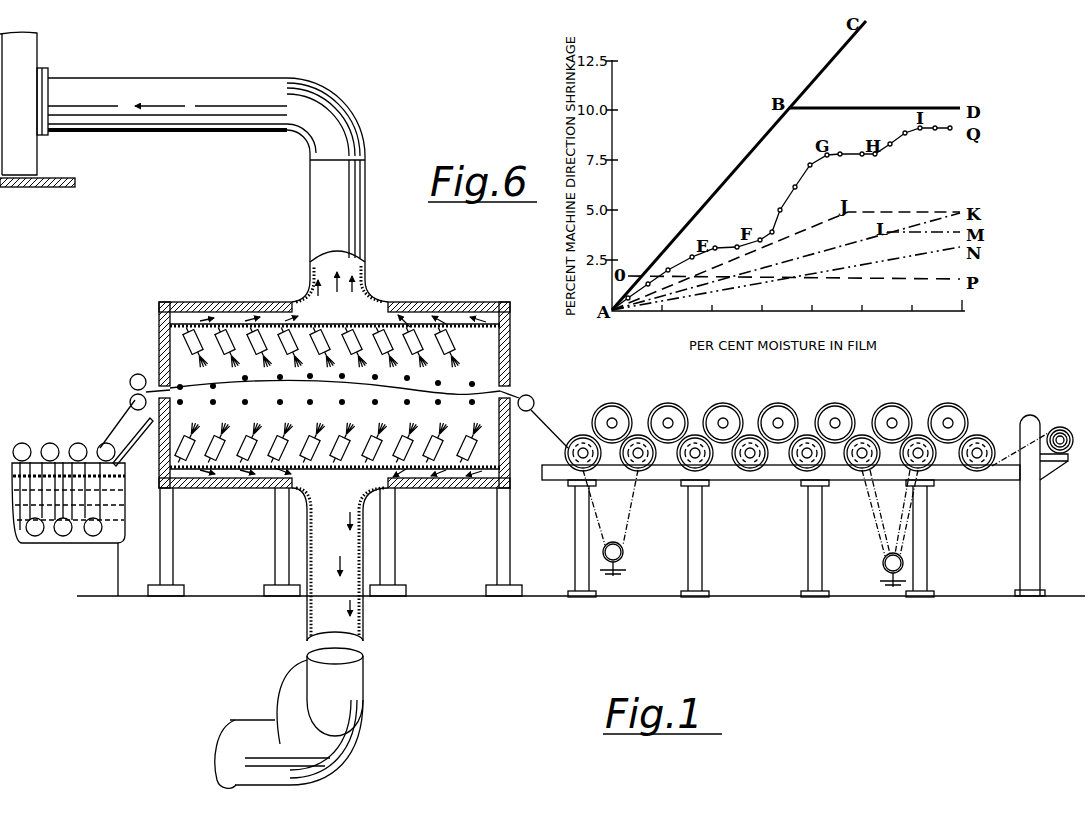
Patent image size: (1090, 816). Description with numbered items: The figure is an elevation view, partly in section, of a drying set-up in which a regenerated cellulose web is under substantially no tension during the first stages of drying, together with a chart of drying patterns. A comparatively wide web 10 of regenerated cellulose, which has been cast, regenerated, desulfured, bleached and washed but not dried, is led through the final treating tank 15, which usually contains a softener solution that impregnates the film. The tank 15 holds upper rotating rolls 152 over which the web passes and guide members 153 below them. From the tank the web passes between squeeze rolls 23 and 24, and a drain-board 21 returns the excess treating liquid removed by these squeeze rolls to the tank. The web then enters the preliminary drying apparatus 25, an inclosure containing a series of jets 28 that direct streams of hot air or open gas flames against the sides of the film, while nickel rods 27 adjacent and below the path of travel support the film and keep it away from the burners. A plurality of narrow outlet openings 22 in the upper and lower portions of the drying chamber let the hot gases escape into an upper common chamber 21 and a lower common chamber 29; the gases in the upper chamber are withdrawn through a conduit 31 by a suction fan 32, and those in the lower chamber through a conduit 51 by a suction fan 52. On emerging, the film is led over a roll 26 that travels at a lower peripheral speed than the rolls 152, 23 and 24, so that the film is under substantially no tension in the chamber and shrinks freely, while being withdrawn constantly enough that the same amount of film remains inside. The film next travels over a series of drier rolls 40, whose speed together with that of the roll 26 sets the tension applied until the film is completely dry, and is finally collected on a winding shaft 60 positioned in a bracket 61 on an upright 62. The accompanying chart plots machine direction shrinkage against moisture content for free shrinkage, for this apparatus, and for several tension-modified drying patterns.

The web of regenerated cellulose 10 is at (22, 442).
The final treating tank 15 is at (26, 545).
The drain-board 21 is at (257, 318).
The narrow outlet openings 22 is at (300, 330).
The squeeze roll 23 is at (136, 374).
The squeeze roll 24 is at (130, 398).
The preliminary drying apparatus 25 is at (458, 302).
The roll 26 is at (532, 397).
The nickel rods 27 is at (480, 372).
The jets 28 is at (225, 336).
The lower common chamber 29 is at (487, 473).
The conduit 31 is at (322, 188).
The suction fan 32 is at (28, 62).
The drier rolls 40 is at (825, 417).
The conduit 51 is at (348, 622).
The suction fan 52 is at (372, 698).
The winding shaft 60 is at (1050, 426).
The bracket 61 is at (1060, 470).
The upright 62 is at (1028, 550).
The rotating rolls 152 is at (100, 446).
The guide members 153 is at (88, 534).